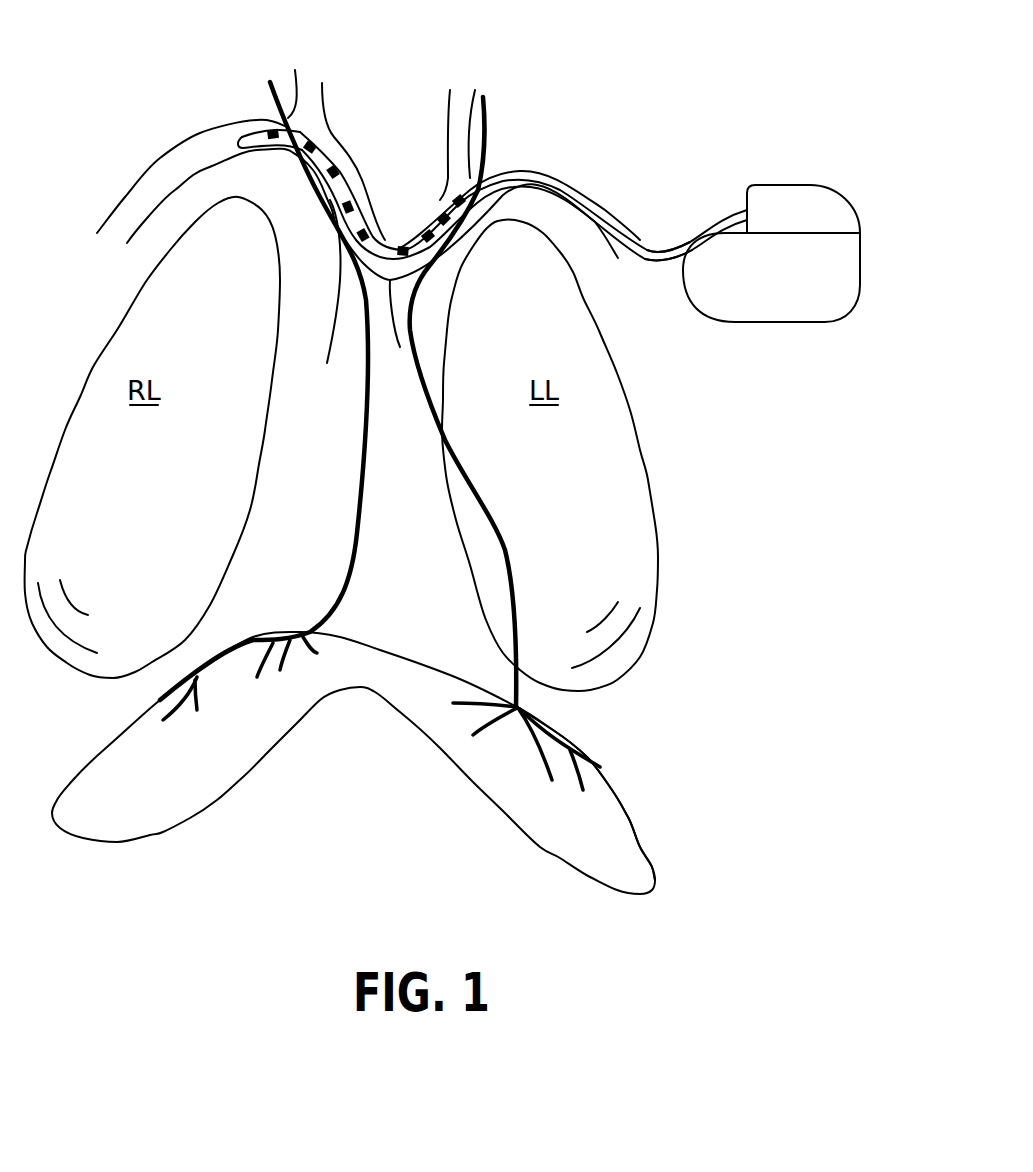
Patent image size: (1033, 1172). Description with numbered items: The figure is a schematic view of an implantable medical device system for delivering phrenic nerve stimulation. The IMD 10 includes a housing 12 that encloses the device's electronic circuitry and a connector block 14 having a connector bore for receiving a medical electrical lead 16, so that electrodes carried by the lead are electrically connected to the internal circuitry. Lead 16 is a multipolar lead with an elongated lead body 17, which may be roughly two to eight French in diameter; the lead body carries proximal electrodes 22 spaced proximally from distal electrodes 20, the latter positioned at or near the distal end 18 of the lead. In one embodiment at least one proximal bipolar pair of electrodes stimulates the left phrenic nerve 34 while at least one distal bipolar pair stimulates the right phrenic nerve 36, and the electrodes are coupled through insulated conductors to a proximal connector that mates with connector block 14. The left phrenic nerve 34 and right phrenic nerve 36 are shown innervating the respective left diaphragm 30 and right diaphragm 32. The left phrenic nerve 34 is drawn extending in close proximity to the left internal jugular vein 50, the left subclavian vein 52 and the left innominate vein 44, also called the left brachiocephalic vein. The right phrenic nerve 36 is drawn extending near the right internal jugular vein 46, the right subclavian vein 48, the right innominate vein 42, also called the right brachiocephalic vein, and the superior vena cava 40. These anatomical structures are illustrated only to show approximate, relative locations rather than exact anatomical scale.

The implantable medical device 10 is at (797, 127).
The housing 12 is at (770, 323).
The connector block 14 is at (855, 215).
The medical electrical lead 16 is at (471, 197).
The lead body 17 is at (660, 262).
The distal end 18 is at (237, 145).
The distal electrodes 20 is at (330, 146).
The proximal electrodes 22 is at (430, 212).
The left diaphragm 30 is at (618, 858).
The right diaphragm 32 is at (97, 807).
The left phrenic nerve 34 is at (488, 148).
The right phrenic nerve 36 is at (272, 96).
The superior vena cava 40 is at (335, 318).
The right innominate vein 42 is at (318, 180).
The left innominate vein 44 is at (393, 222).
The right internal jugular vein 46 is at (323, 92).
The right subclavian vein 48 is at (138, 183).
The left internal jugular vein 50 is at (450, 98).
The left subclavian vein 52 is at (605, 207).